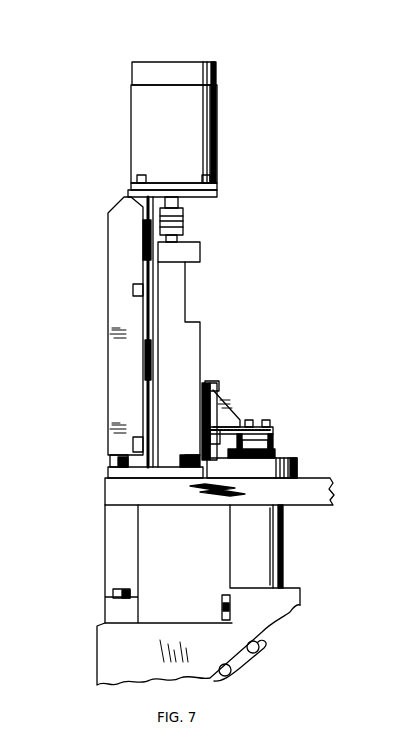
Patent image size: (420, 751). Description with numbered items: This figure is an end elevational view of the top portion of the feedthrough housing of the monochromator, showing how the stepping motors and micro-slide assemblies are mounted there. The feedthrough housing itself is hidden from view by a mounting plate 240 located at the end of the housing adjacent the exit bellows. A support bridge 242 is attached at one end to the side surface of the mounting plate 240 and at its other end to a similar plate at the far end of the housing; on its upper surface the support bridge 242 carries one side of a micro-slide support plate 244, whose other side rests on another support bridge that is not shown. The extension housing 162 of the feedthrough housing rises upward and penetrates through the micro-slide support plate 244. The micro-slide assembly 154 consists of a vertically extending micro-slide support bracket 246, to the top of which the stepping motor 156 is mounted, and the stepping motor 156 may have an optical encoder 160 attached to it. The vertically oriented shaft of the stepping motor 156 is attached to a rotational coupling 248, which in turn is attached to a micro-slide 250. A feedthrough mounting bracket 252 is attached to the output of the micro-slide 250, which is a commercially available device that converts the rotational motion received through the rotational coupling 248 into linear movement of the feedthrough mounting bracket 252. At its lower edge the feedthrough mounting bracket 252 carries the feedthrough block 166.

The micro-slide assembly 154 is at (101, 336).
The stepping motor 156 is at (217, 144).
The optical encoder 160 is at (217, 67).
The extension housing 162 is at (265, 552).
The feedthrough block 166 is at (273, 434).
The mounting plate 240 is at (110, 660).
The support bridge 242 is at (112, 546).
The micro-slide support plate 244 is at (325, 494).
The micro-slide support bracket 246 is at (118, 242).
The rotational coupling 248 is at (184, 214).
The micro-slide 250 is at (175, 278).
The feedthrough mounting bracket 252 is at (220, 401).